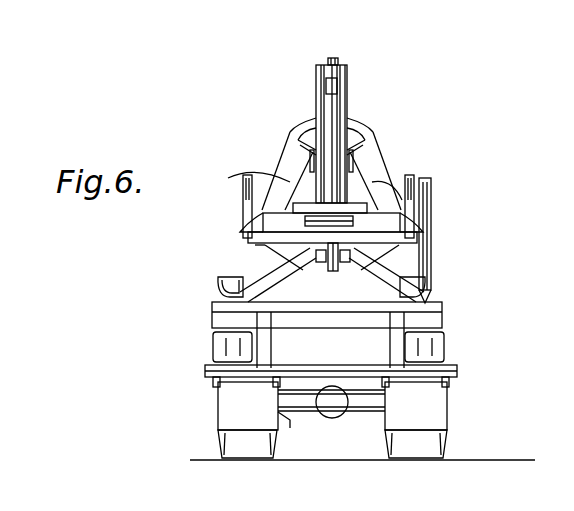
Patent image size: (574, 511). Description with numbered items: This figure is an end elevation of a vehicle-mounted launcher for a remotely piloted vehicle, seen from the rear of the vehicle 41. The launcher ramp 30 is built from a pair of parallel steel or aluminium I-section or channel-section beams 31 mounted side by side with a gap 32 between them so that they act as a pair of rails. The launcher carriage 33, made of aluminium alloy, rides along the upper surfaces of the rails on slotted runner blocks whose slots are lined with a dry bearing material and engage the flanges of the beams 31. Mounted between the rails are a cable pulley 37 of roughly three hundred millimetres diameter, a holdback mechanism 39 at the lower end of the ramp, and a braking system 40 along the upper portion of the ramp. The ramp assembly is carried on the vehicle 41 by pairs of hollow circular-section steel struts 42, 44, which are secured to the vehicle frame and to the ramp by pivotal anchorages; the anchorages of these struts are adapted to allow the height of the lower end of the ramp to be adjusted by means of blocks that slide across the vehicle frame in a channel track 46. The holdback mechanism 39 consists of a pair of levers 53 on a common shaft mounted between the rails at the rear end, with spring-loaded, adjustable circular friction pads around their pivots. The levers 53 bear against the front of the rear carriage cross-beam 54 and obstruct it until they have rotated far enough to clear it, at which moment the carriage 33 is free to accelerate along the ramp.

The launcher ramp 30 is at (319, 88).
The beams 31 is at (320, 94).
The gap 32 is at (338, 122).
The launcher carriage 33 is at (378, 200).
The cable pulley 37 is at (368, 262).
The holdback mechanism 39 is at (305, 268).
The braking system 40 is at (300, 123).
The vehicle 41 is at (458, 378).
The struts 42 is at (230, 280).
The struts 44 is at (281, 172).
The channel track 46 is at (283, 292).
The levers 53 is at (450, 190).
The rear carriage cross-beam 54 is at (290, 214).